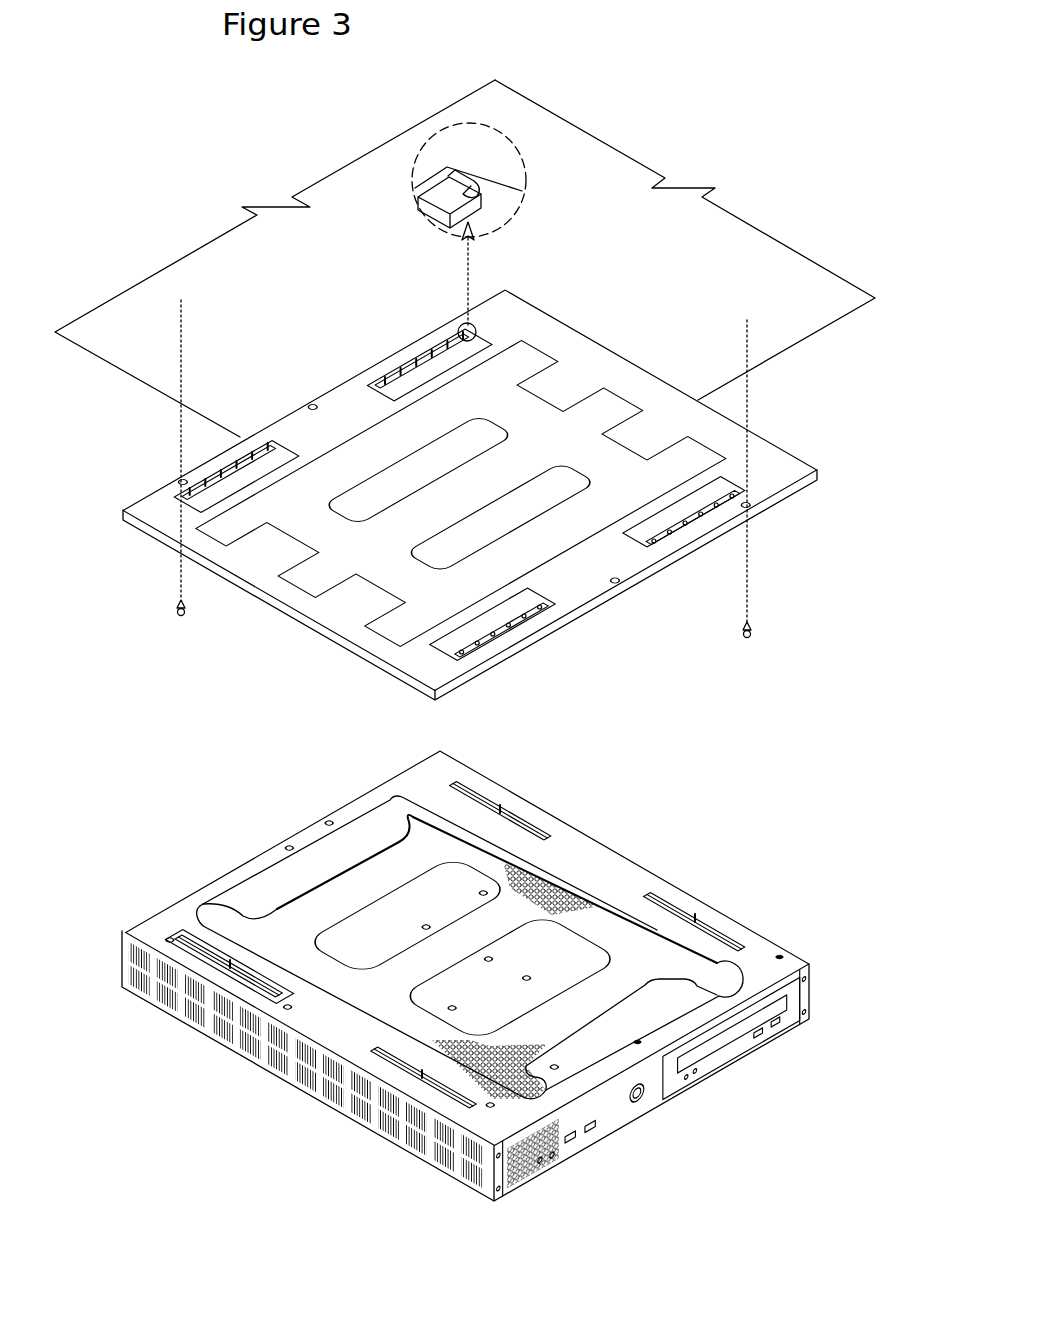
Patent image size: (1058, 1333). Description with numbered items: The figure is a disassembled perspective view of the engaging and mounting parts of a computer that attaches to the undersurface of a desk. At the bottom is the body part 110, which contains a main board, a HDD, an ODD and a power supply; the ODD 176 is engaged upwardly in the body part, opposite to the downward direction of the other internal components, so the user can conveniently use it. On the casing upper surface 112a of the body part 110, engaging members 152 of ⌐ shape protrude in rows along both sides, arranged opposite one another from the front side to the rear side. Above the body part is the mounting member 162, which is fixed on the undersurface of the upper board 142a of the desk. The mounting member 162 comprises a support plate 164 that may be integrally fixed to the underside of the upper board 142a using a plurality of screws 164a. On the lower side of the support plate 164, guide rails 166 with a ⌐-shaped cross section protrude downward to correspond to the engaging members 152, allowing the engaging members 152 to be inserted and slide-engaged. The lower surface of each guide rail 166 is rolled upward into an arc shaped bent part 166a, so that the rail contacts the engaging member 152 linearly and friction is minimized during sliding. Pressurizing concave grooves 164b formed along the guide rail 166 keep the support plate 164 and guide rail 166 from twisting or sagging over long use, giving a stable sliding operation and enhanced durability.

The upper board 142a is at (594, 157).
The mounting member 162 is at (151, 480).
The support plate 164 is at (350, 628).
The screws 164a is at (175, 613).
The pressurizing concave grooves 164b is at (247, 473).
The guide rail 166 is at (448, 214).
The arc shaped bent part 166a is at (471, 184).
The body part 110 is at (673, 862).
The casing upper surface 112a is at (366, 810).
The engaging member 152 is at (520, 822).
The ODD 176 is at (743, 1041).